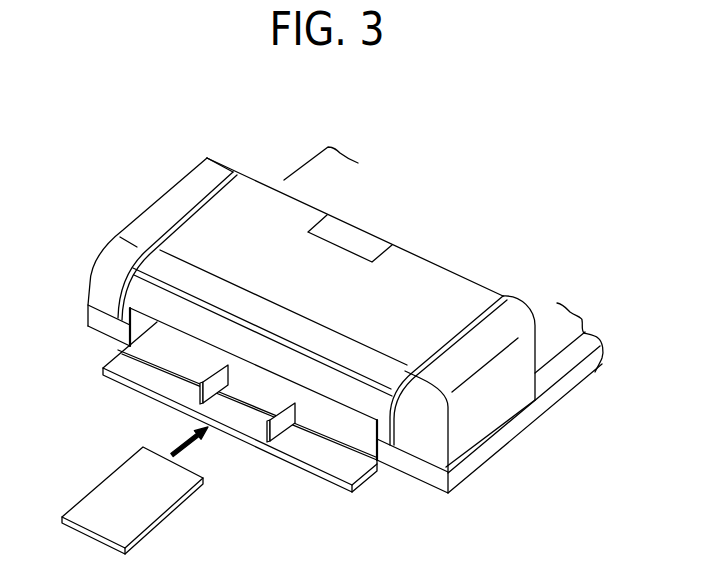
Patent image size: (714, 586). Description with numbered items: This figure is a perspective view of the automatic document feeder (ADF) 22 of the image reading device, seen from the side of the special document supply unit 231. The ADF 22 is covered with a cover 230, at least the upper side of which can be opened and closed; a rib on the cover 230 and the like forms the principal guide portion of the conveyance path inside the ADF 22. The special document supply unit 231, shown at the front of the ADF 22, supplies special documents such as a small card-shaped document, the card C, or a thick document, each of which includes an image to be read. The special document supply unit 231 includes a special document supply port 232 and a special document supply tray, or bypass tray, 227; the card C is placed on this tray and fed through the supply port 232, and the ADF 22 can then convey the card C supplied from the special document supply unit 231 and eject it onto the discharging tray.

The automatic document feeder (ADF) 22 is at (313, 321).
The cover 230 is at (255, 190).
The special document supply unit 231 is at (127, 390).
The special document supply port 232 is at (263, 388).
The special document supply tray (bypass tray) 227 is at (361, 482).
The card C is at (110, 487).